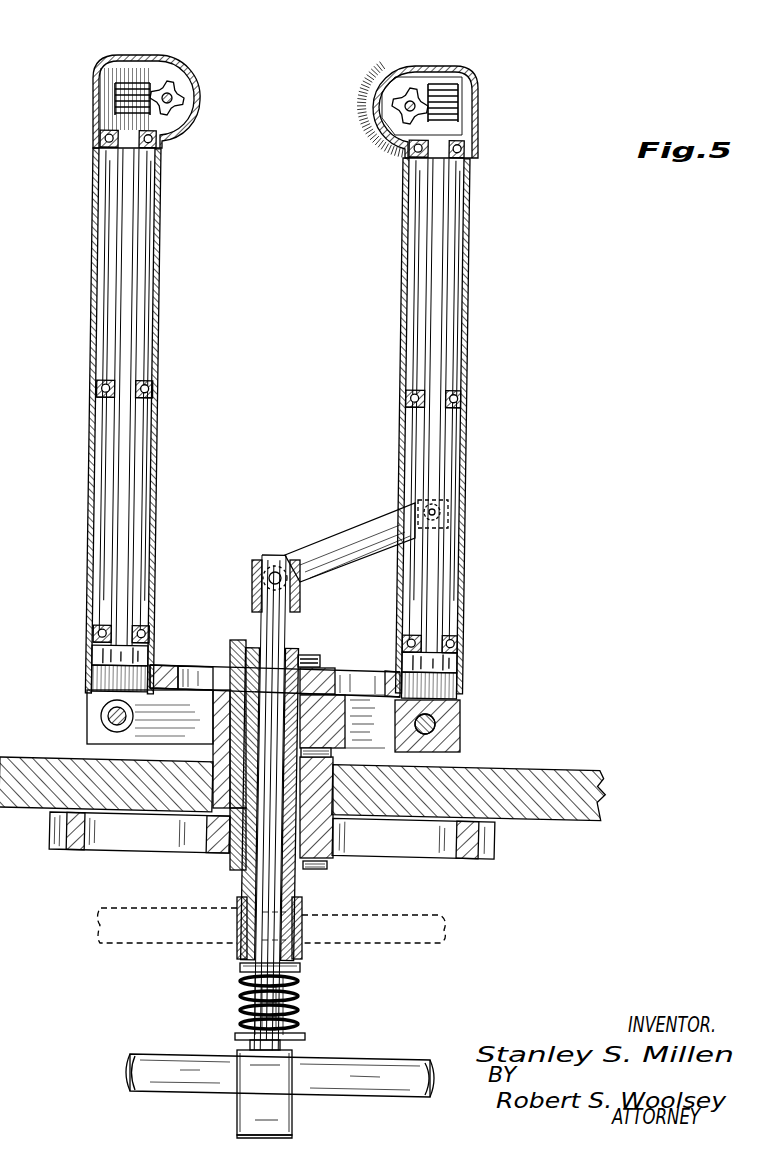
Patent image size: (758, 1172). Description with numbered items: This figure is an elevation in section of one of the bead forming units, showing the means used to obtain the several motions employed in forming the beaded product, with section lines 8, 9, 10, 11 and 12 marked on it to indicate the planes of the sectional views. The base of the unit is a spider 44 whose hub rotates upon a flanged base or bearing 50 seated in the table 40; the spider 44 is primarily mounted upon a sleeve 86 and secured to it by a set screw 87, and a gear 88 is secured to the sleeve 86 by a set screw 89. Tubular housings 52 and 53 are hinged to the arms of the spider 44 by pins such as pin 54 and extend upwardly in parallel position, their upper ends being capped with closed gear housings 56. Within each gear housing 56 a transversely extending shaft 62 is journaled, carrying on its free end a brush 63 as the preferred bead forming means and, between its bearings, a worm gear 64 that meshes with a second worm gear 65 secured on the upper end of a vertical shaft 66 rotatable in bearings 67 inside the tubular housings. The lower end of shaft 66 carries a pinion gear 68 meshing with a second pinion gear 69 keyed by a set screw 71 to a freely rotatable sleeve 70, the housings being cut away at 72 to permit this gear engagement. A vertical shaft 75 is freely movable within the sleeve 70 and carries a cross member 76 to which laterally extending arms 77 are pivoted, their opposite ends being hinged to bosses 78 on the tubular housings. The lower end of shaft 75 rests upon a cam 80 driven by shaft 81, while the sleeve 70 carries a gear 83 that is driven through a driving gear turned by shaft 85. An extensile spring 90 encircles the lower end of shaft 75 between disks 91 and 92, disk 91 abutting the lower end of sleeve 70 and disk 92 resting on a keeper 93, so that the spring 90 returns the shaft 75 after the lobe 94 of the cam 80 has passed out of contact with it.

The section line 8- 8 is at (502, 668).
The section line 9- 9 is at (502, 717).
The section line 10- 10 is at (494, 470).
The section line 11- 11 is at (547, 50).
The section line 12- 12 is at (505, 132).
The table 40 is at (578, 772).
The spider 44 is at (192, 736).
The flanged base or bearing 50 is at (215, 780).
The tubular housing 52 is at (156, 422).
The tubular housing 53 is at (468, 350).
The pin 54 is at (112, 722).
The gear housing 56 is at (92, 97).
The transversely extending shaft 62 is at (174, 102).
The brush 63 is at (368, 90).
The worm gear 64 is at (180, 84).
The second worm gear 65 is at (128, 80).
The vertical shaft 66 is at (139, 325).
The bearing 67 is at (146, 152).
The pinion gear 68 is at (88, 665).
The second pinion gear 69 is at (186, 670).
The sleeve 70 is at (300, 660).
The set screw 71 is at (340, 648).
The cut away section 72 is at (160, 660).
The vertical shaft 75 is at (290, 625).
The cross member 76 is at (252, 575).
The laterally extending arms 77 is at (358, 540).
The boss 78 is at (448, 525).
The cam 80 is at (250, 1092).
The shaft 81 is at (380, 1062).
The gear 83 is at (302, 930).
The shaft 85 is at (428, 945).
The sleeve 86 is at (243, 895).
The set screw 87 is at (332, 755).
The gear 88 is at (495, 850).
The set screw 89 is at (327, 866).
The extensile spring 90 is at (298, 1000).
The disk 91 is at (300, 968).
The disk 92 is at (300, 1040).
The keeper 93 is at (250, 1046).
The lobe 94 is at (282, 1140).